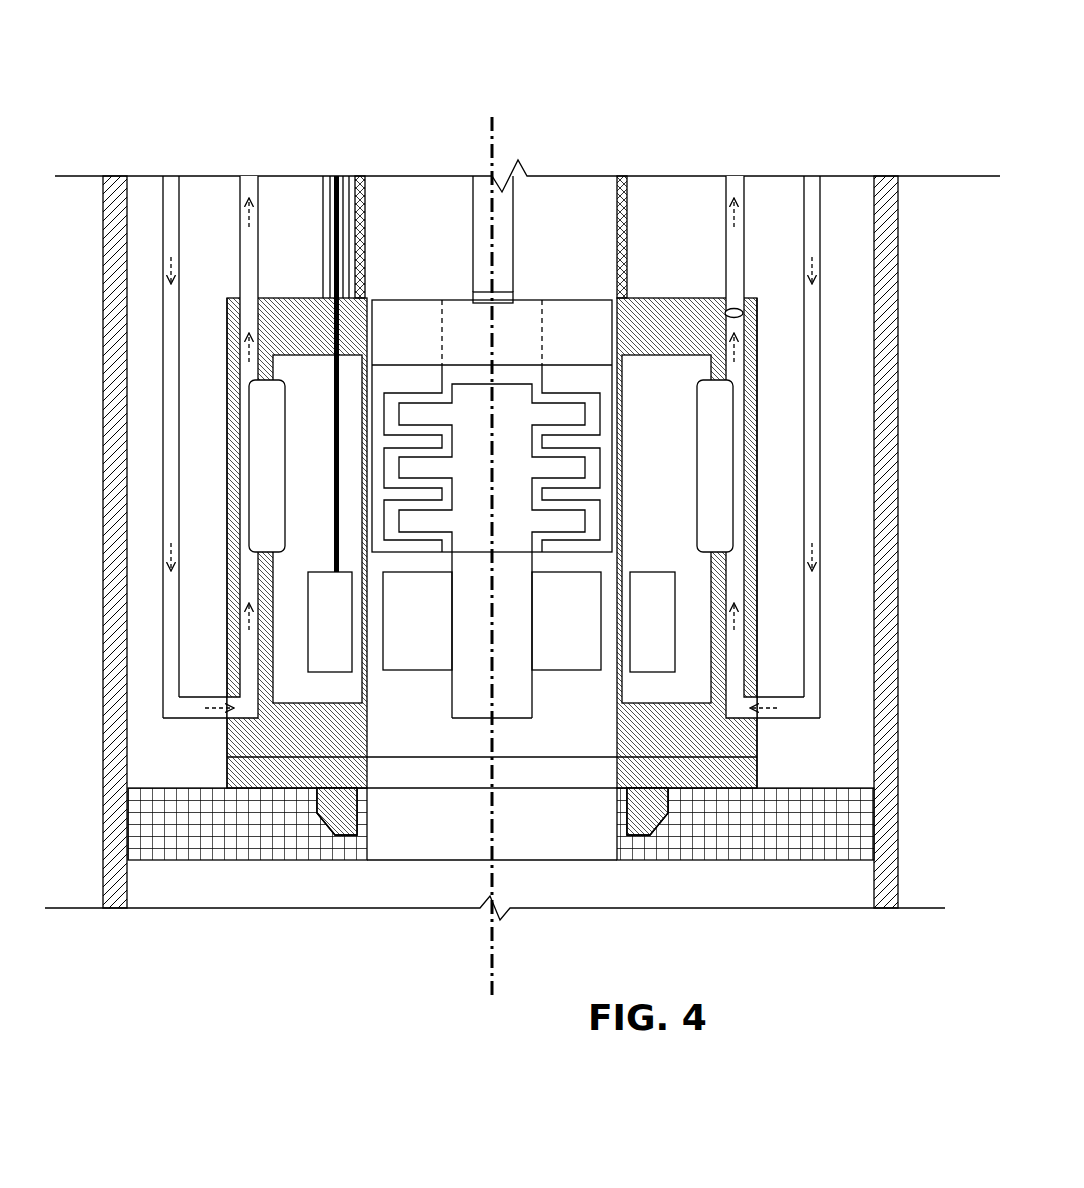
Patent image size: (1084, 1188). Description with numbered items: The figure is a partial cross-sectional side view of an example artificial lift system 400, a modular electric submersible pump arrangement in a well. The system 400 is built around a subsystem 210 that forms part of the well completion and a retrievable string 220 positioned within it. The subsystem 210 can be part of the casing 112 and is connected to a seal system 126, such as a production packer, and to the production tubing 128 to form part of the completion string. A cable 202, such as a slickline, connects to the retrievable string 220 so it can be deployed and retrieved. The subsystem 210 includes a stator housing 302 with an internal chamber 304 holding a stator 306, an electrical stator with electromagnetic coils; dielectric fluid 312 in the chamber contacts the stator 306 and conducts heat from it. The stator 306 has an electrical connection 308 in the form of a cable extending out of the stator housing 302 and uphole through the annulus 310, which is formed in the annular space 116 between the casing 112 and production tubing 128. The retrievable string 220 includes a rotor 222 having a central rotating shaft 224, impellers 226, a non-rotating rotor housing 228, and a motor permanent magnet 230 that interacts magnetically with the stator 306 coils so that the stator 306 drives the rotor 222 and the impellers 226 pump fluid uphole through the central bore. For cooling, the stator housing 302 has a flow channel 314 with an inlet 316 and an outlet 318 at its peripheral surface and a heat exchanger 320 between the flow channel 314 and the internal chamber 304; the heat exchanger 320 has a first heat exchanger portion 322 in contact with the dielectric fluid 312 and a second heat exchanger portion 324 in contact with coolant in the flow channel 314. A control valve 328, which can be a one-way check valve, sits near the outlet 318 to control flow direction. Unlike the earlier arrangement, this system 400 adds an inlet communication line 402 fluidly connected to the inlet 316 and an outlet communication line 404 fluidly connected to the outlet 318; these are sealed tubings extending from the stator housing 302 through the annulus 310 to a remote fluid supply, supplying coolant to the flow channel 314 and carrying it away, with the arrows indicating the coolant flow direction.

The artificial lift system 400 is at (648, 90).
The casing 112 is at (893, 260).
The annular space 116 is at (228, 218).
The seal system 126 is at (743, 860).
The production tubing 128 is at (627, 203).
The cable 202 is at (472, 225).
The subsystem 210 is at (669, 296).
The retrievable string 220 is at (399, 296).
The rotor 222 is at (461, 723).
The central rotating shaft 224 is at (520, 668).
The impellers 226 is at (557, 507).
The rotor housing 228 is at (410, 380).
The motor permanent magnet 230 is at (438, 633).
The stator housing 302 is at (312, 297).
The internal chamber 304 is at (288, 369).
The stator 306 is at (309, 637).
The electrical connection 308 is at (333, 253).
The annulus 310 is at (844, 186).
The dielectric fluid 312 is at (293, 577).
The flow channel 314 is at (746, 592).
The inlet 316 is at (759, 714).
The outlet 318 is at (735, 296).
The heat exchanger 320 is at (730, 482).
The first heat exchanger portion 322 is at (695, 460).
The second heat exchanger portion 324 is at (737, 448).
The control valve 328 is at (740, 307).
The inlet communication line 402 is at (802, 213).
The outlet communication line 404 is at (722, 213).